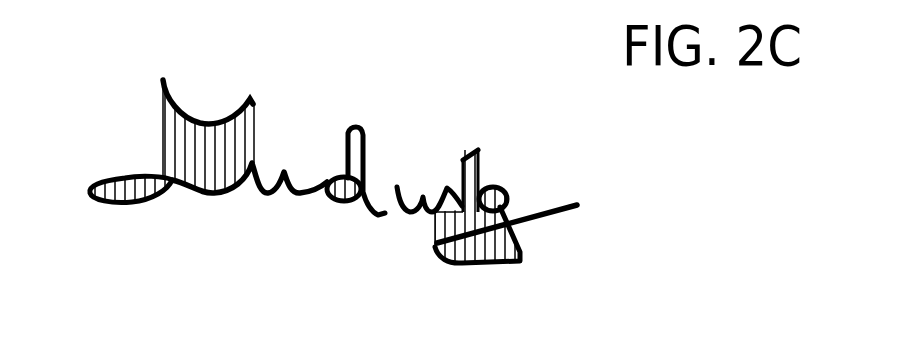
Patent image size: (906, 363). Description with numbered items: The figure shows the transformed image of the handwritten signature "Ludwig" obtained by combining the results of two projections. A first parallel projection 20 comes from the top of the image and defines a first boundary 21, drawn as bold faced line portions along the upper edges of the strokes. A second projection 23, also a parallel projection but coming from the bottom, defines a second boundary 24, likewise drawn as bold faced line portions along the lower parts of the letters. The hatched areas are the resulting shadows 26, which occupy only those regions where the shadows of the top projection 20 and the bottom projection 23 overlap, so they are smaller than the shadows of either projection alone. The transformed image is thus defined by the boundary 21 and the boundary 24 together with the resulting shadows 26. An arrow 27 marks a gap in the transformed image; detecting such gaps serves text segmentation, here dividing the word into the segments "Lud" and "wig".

The first parallel projection 20 is at (340, 108).
The first boundary 21 is at (178, 103).
The second projection 23 is at (339, 222).
The second boundary 24 is at (117, 207).
The resulting shadows 26 is at (108, 177).
The gap 27 is at (386, 196).